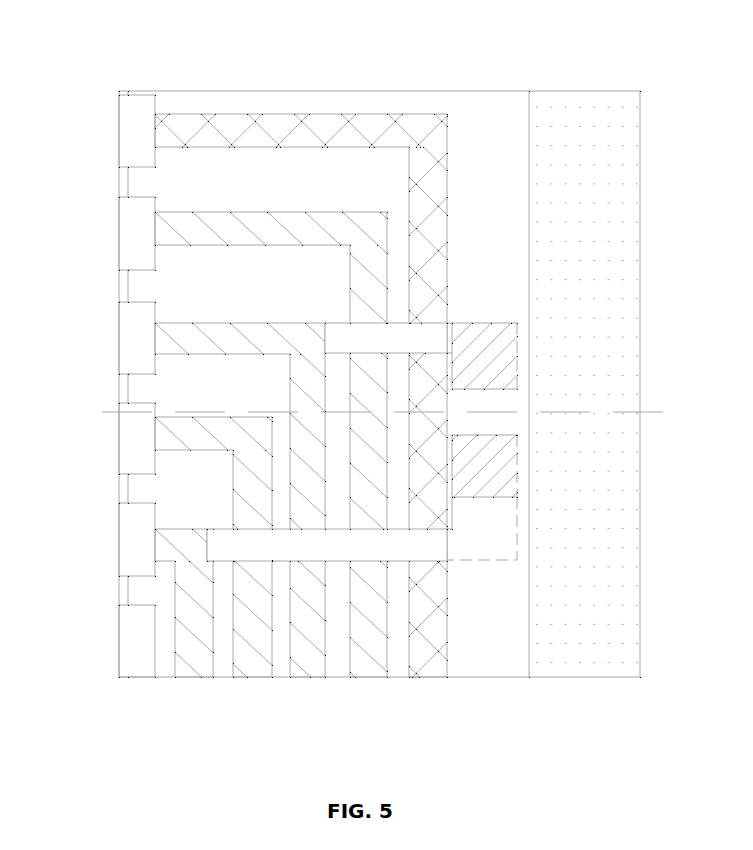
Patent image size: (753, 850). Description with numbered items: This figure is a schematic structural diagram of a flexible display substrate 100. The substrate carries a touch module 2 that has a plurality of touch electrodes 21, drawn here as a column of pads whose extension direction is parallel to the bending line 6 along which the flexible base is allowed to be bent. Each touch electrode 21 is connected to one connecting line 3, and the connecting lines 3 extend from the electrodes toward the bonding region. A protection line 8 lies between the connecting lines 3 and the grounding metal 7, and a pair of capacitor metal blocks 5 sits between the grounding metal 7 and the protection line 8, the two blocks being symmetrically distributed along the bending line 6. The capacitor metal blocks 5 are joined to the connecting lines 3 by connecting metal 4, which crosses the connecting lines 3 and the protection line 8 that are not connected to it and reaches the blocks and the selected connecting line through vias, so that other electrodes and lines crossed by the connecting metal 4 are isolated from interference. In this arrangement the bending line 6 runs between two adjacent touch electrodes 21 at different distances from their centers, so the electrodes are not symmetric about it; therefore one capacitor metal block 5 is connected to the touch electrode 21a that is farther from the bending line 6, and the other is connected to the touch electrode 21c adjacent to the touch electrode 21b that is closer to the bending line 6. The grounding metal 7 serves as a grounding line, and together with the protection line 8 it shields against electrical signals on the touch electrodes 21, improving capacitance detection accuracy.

The flexible display substrate 100 is at (392, 57).
The touch module 2 is at (94, 384).
The touch electrodes 21 is at (132, 260).
The touch electrode 21a is at (133, 330).
The touch electrode 21b is at (135, 432).
The touch electrode 21c is at (110, 537).
The connecting line 3 is at (195, 648).
The connecting metal 4 is at (428, 332).
The capacitor metal blocks 5 is at (497, 360).
The bending line 6 is at (518, 412).
The grounding metal 7 is at (577, 243).
The protection line 8 is at (440, 653).